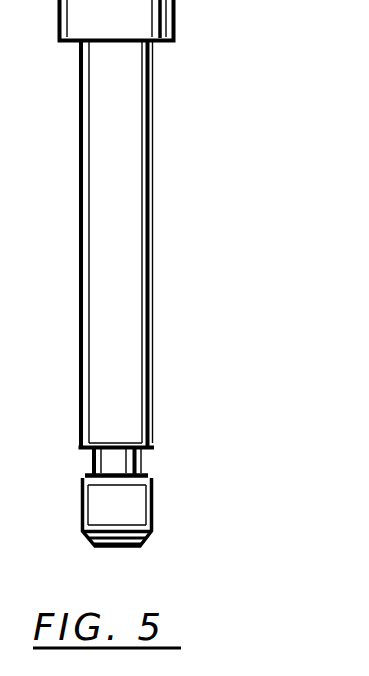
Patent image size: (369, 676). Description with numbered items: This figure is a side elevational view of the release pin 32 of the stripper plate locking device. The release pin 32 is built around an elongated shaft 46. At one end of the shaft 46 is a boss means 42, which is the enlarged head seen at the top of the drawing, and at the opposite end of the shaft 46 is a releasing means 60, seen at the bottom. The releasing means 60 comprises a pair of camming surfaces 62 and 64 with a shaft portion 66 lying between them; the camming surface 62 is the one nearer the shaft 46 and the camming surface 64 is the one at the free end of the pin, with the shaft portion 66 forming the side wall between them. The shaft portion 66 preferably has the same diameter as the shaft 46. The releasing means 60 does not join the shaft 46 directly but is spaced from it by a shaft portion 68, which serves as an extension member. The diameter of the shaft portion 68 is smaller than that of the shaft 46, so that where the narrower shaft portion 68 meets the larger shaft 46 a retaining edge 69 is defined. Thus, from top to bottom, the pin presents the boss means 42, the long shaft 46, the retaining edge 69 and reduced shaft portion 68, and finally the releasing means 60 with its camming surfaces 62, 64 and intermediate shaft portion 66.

The release pin 32 is at (209, 98).
The boss means 42 is at (175, 17).
The shaft 46 is at (153, 204).
The releasing means 60 is at (155, 502).
The camming surface 62 is at (88, 474).
The camming surface 64 is at (152, 540).
The shaft portion 66 is at (152, 514).
The shaft portion 68 is at (144, 470).
The retaining edge 69 is at (146, 462).